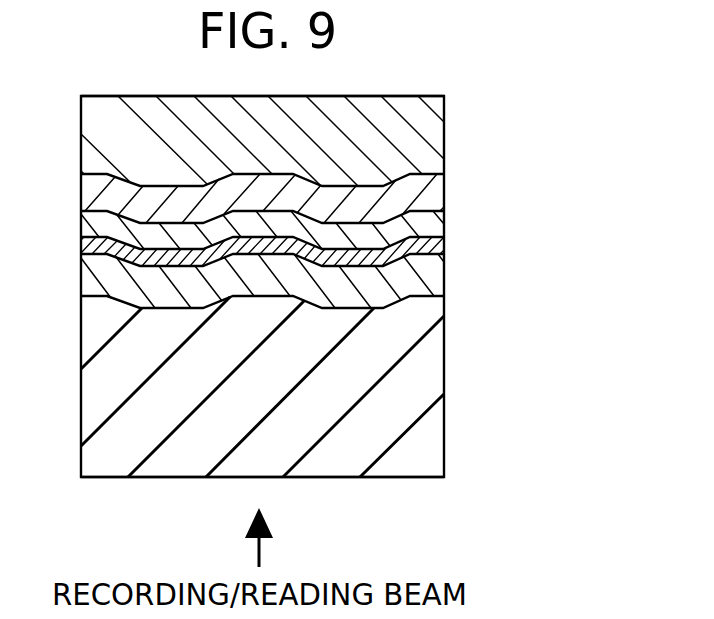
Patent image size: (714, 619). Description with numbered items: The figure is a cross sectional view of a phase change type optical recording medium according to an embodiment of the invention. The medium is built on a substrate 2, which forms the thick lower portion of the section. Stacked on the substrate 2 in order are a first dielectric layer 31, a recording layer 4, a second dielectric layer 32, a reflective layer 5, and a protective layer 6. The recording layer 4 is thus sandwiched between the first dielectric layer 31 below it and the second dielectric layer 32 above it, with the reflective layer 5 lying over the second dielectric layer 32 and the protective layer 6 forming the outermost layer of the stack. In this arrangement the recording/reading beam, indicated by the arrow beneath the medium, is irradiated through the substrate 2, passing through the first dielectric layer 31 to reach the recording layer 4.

The substrate 2 is at (443, 378).
The first dielectric layer 31 is at (443, 273).
The recording layer 4 is at (443, 238).
The second dielectric layer 32 is at (443, 220).
The reflective layer 5 is at (443, 195).
The protective layer 6 is at (443, 137).